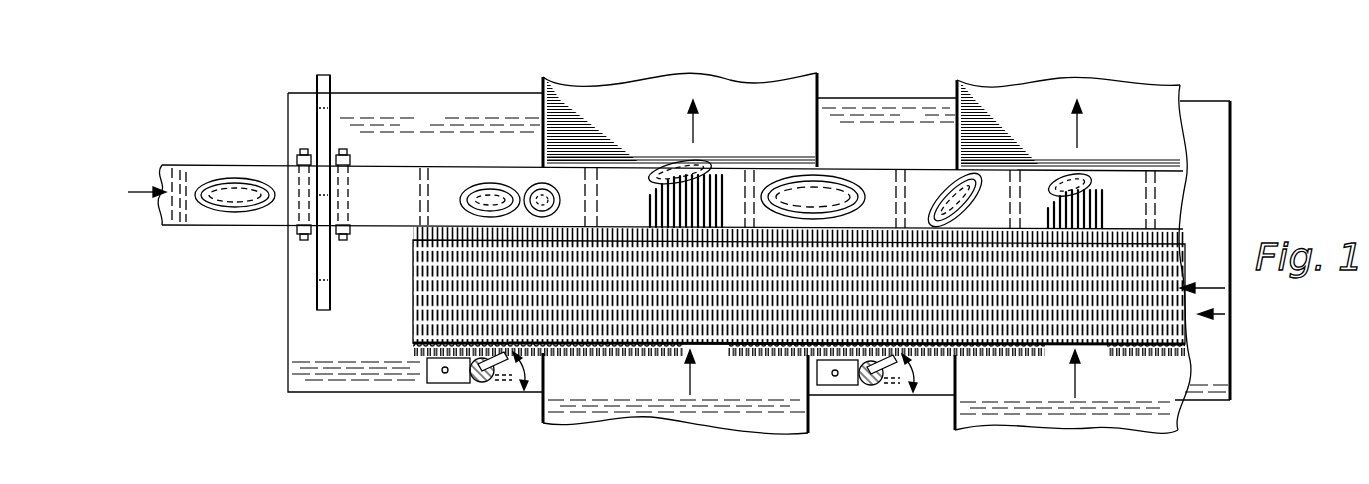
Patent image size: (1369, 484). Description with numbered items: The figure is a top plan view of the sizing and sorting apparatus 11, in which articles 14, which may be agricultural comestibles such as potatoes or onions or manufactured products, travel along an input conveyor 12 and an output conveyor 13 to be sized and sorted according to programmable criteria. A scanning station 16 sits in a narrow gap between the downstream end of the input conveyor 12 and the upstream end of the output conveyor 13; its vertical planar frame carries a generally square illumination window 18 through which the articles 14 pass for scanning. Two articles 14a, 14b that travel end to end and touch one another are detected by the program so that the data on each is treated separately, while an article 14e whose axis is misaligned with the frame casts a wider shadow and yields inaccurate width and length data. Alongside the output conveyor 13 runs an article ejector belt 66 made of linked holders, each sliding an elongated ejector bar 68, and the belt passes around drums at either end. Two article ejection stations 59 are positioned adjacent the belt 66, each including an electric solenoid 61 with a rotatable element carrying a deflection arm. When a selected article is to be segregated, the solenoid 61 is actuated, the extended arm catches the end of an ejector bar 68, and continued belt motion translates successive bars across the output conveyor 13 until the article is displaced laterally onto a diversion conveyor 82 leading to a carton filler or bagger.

The apparatus 11 is at (1260, 87).
The input conveyor 12 is at (190, 165).
The output conveyor 13 is at (1190, 196).
The articles 14 is at (238, 183).
The first article 14a is at (538, 190).
The second article 14b is at (497, 195).
The misaligned article 14e is at (938, 195).
The scanning station 16 is at (352, 107).
The illumination window 18 is at (305, 244).
The article ejection station 59 is at (478, 418).
The electric solenoid 61 is at (445, 383).
The article ejector belt 66 is at (1235, 314).
The ejector bar 68 is at (598, 353).
The diversion conveyor 82 is at (718, 93).